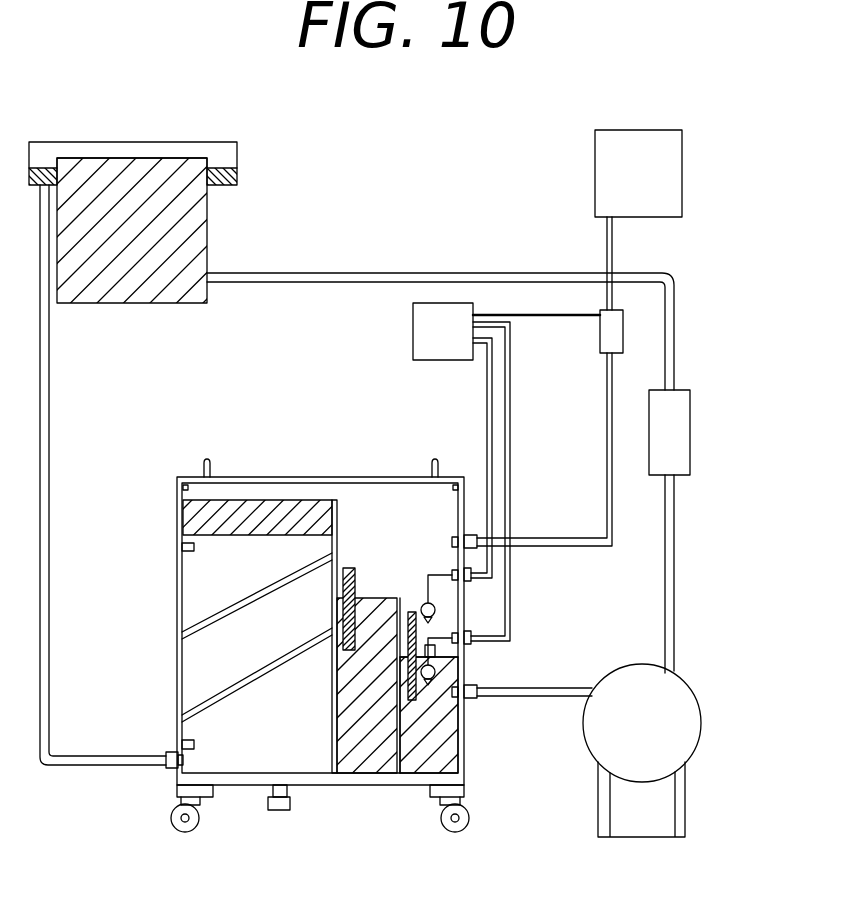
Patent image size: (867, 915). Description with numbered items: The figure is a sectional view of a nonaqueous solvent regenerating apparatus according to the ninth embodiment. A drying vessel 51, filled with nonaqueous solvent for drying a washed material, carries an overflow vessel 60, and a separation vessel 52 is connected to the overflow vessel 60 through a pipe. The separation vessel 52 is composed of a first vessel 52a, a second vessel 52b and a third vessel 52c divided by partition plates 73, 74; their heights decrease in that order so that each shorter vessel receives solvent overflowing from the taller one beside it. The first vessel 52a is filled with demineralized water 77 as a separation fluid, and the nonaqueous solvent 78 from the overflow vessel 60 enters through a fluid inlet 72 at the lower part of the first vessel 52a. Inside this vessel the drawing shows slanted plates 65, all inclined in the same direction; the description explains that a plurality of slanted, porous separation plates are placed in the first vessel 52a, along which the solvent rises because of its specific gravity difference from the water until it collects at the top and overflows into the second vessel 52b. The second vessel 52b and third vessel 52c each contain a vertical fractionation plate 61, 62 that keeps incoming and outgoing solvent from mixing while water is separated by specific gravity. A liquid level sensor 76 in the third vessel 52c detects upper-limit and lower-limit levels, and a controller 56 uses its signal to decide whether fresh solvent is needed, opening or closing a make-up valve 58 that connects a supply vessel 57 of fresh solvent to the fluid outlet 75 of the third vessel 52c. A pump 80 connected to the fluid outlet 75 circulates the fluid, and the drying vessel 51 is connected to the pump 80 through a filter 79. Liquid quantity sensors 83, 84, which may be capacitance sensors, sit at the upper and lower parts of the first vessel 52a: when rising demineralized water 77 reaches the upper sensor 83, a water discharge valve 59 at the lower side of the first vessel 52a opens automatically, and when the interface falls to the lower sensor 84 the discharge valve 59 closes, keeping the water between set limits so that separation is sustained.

The drying vessel 51 is at (190, 223).
The separation vessel 52 is at (339, 495).
The first vessel 52a is at (233, 498).
The second vessel 52b is at (373, 600).
The third vessel 52c is at (442, 643).
The controller 56 is at (430, 335).
The supply vessel 57 is at (620, 165).
The make-up valve 58 is at (610, 333).
The water discharge valve 59 is at (278, 812).
The overflow vessel 60 is at (226, 155).
The vertical fractionation plate 61 is at (352, 567).
The vertical fractionation plate 62 is at (412, 612).
The baffle plates 65 is at (215, 695).
The fluid inlet 72 is at (170, 752).
The partition plate 73 is at (332, 500).
The partition plate 74 is at (398, 605).
The fluid outlet 75 is at (477, 690).
The liquid level sensor 76 is at (440, 605).
The demineralized water 77 is at (310, 762).
The nonaqueous solvent 78 is at (270, 510).
The filter 79 is at (683, 433).
The pump 80 is at (678, 707).
The upper liquid quantity sensor 83 is at (180, 560).
The lower liquid quantity sensor 84 is at (194, 745).